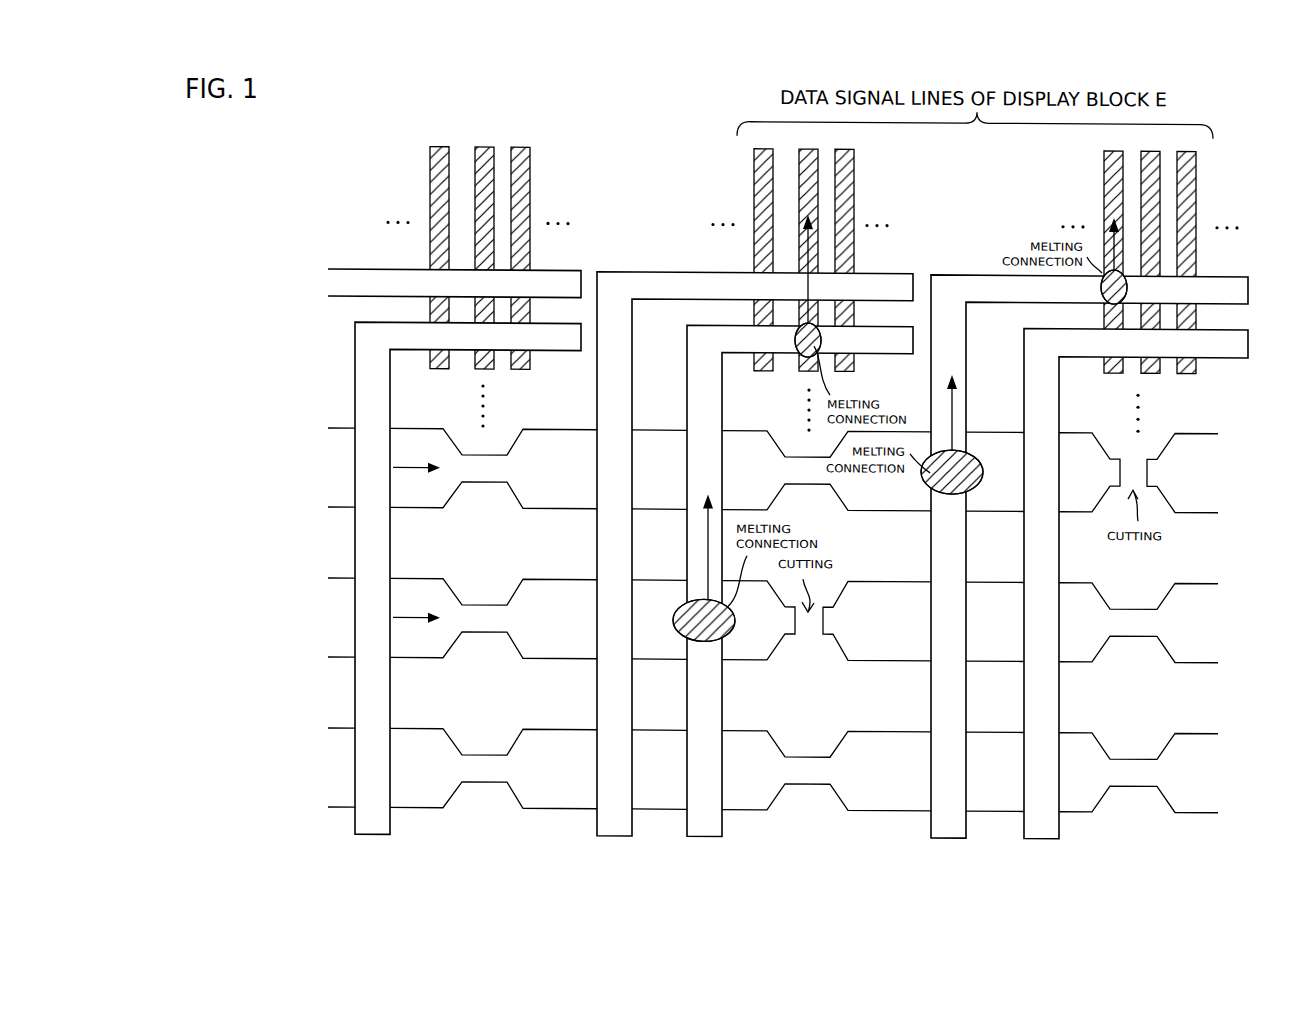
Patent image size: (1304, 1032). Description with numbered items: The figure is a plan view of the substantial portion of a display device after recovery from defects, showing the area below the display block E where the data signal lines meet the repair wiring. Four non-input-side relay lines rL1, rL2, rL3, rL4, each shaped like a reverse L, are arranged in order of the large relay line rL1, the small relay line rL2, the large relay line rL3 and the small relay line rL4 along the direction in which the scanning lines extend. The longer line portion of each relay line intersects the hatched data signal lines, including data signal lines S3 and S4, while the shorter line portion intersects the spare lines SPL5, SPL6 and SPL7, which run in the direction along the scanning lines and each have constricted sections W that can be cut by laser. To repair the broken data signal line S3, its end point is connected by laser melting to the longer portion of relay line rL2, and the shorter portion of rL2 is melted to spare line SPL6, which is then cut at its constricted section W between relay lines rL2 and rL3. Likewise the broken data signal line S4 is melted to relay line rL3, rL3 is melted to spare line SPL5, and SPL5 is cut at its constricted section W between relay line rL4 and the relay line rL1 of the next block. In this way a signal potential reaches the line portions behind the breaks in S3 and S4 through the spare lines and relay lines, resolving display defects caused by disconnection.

The large non-input-side relay line rL1 is at (641, 270).
The small non-input-side relay line rL2 is at (742, 352).
The large non-input-side relay line rL3 is at (958, 271).
The small non-input-side relay line rL4 is at (1084, 354).
The data signal line S3 is at (808, 249).
The data signal line S4 is at (1114, 252).
The spare line SPL5 is at (558, 428).
The spare line SPL6 is at (558, 578).
The spare line SPL7 is at (558, 728).
The constricted section W is at (768, 621).